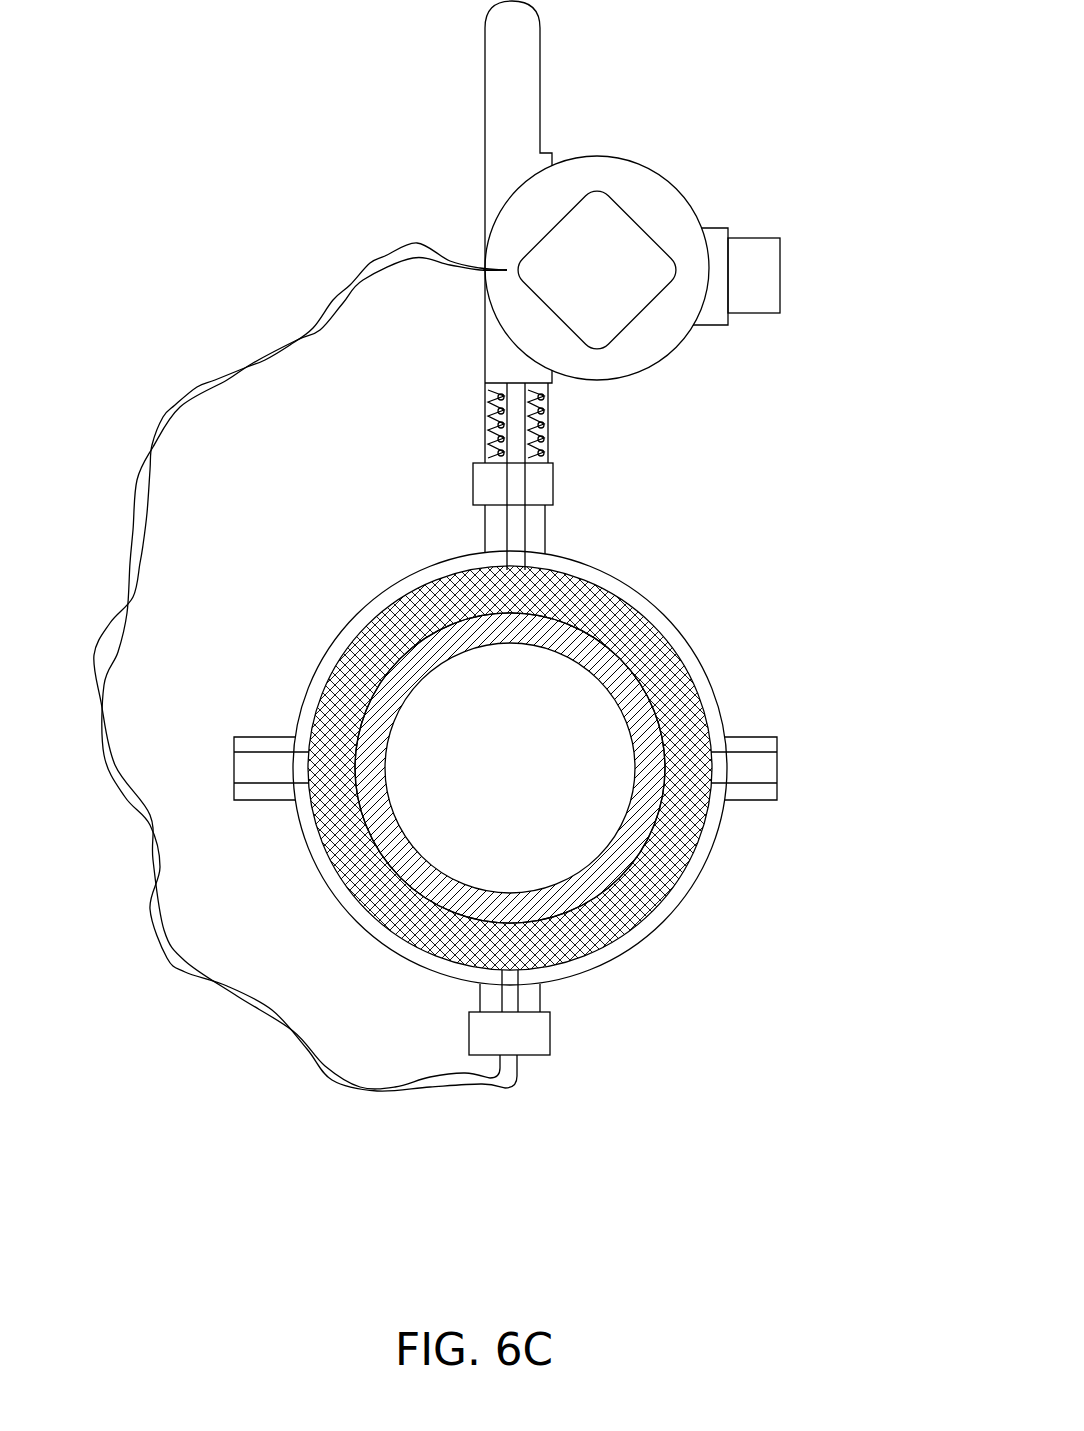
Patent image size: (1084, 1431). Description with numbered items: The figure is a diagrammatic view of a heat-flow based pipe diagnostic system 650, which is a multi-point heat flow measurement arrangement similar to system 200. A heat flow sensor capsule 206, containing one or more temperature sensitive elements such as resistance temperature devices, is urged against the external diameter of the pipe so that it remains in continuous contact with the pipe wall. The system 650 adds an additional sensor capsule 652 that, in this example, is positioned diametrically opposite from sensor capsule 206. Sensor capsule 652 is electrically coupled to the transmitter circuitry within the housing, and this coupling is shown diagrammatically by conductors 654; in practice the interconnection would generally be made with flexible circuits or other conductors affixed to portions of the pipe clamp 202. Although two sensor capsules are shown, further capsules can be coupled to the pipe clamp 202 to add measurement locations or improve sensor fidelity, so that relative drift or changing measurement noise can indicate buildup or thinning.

The heat-flow based pipe diagnostic system 650 is at (796, 97).
The system 200 is at (652, 170).
The heat flow sensor capsule 206 is at (517, 537).
The pipe clamp 202 is at (672, 613).
The additional sensor capsule 652 is at (520, 982).
The conductors 654 is at (206, 996).